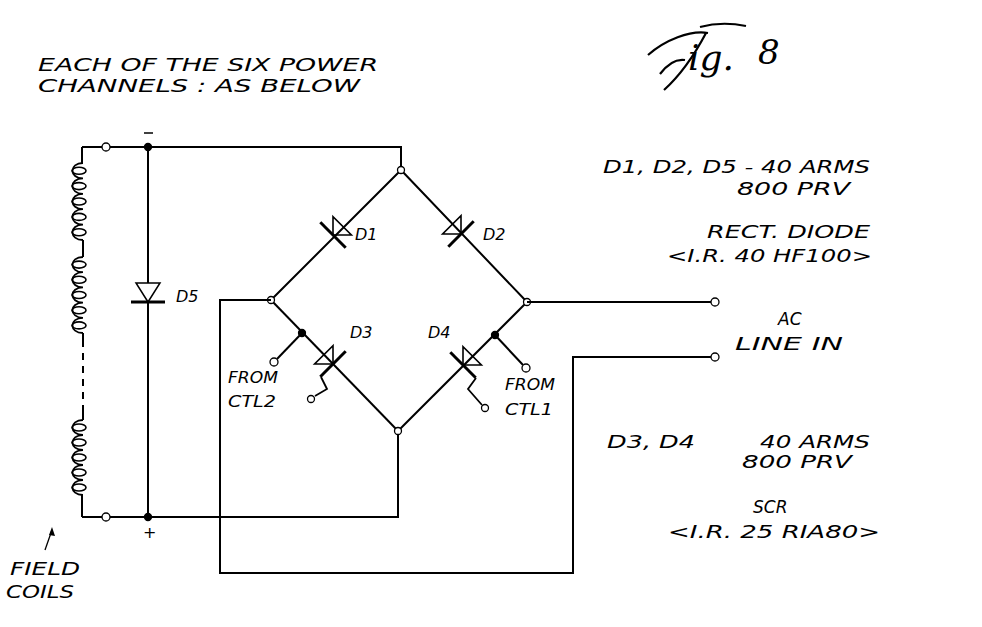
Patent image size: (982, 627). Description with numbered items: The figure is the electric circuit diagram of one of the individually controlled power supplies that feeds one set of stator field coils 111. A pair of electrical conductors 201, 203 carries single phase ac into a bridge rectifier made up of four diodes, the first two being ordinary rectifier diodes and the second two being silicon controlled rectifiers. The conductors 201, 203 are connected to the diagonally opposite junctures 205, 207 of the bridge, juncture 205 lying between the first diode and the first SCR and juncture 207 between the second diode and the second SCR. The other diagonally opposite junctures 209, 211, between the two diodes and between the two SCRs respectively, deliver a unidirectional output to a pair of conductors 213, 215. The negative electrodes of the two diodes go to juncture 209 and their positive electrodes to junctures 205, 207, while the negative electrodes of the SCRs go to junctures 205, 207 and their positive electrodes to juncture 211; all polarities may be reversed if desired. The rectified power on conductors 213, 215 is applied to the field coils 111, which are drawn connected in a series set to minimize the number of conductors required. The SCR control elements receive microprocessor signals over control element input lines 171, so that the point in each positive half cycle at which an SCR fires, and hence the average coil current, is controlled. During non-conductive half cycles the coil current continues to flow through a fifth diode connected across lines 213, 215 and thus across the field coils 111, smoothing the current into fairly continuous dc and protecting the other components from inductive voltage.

The field coils 111 is at (92, 201).
The control element input lines 171 is at (318, 389).
The electrical conductor 201 is at (663, 300).
The electrical conductor 203 is at (663, 355).
The juncture 205 is at (271, 296).
The juncture 207 is at (529, 298).
The juncture 209 is at (405, 168).
The juncture 211 is at (395, 436).
The conductor 213 is at (208, 146).
The conductor 215 is at (262, 520).